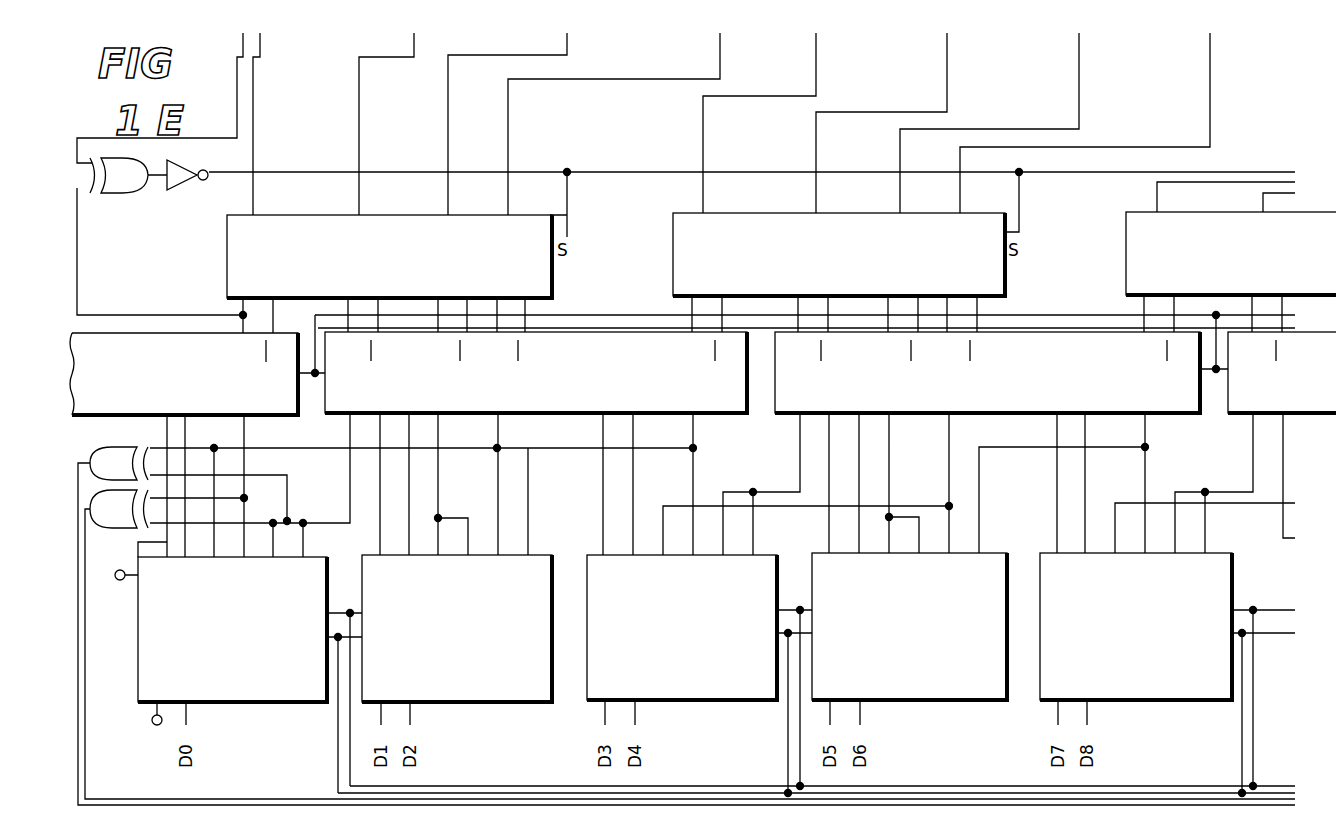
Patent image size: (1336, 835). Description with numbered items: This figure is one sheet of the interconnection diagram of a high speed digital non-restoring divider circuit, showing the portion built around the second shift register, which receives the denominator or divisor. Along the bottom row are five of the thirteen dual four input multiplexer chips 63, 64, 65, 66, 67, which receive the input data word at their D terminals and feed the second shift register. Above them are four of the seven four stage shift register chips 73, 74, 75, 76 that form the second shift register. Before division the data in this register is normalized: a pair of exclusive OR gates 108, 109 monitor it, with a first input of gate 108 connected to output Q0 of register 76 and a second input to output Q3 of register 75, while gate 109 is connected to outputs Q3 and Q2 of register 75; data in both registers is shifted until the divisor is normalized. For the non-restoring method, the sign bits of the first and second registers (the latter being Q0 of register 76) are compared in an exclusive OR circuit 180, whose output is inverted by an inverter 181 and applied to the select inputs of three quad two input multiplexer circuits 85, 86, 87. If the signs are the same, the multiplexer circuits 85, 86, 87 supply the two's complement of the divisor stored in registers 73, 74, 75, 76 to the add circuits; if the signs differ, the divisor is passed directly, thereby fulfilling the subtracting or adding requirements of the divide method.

The exclusive OR circuit 180 is at (142, 207).
The inverter 181 is at (186, 186).
The quad two input multiplexer circuit 87 is at (227, 285).
The quad two input multiplexer circuit 86 is at (673, 297).
The quad two input multiplexer circuit 85 is at (1126, 295).
The four stage shift register chip 76 is at (290, 418).
The four stage shift register chip 75 is at (560, 417).
The four stage shift register chip 74 is at (985, 417).
The four stage shift register chip 73 is at (1245, 417).
The exclusive OR gate 109 is at (100, 458).
The exclusive OR gate 108 is at (103, 517).
The four input multiplexer chip 67 is at (265, 705).
The four input multiplexer chip 66 is at (505, 705).
The four input multiplexer chip 65 is at (720, 703).
The four input multiplexer chip 64 is at (945, 703).
The four input multiplexer chip 63 is at (1168, 703).